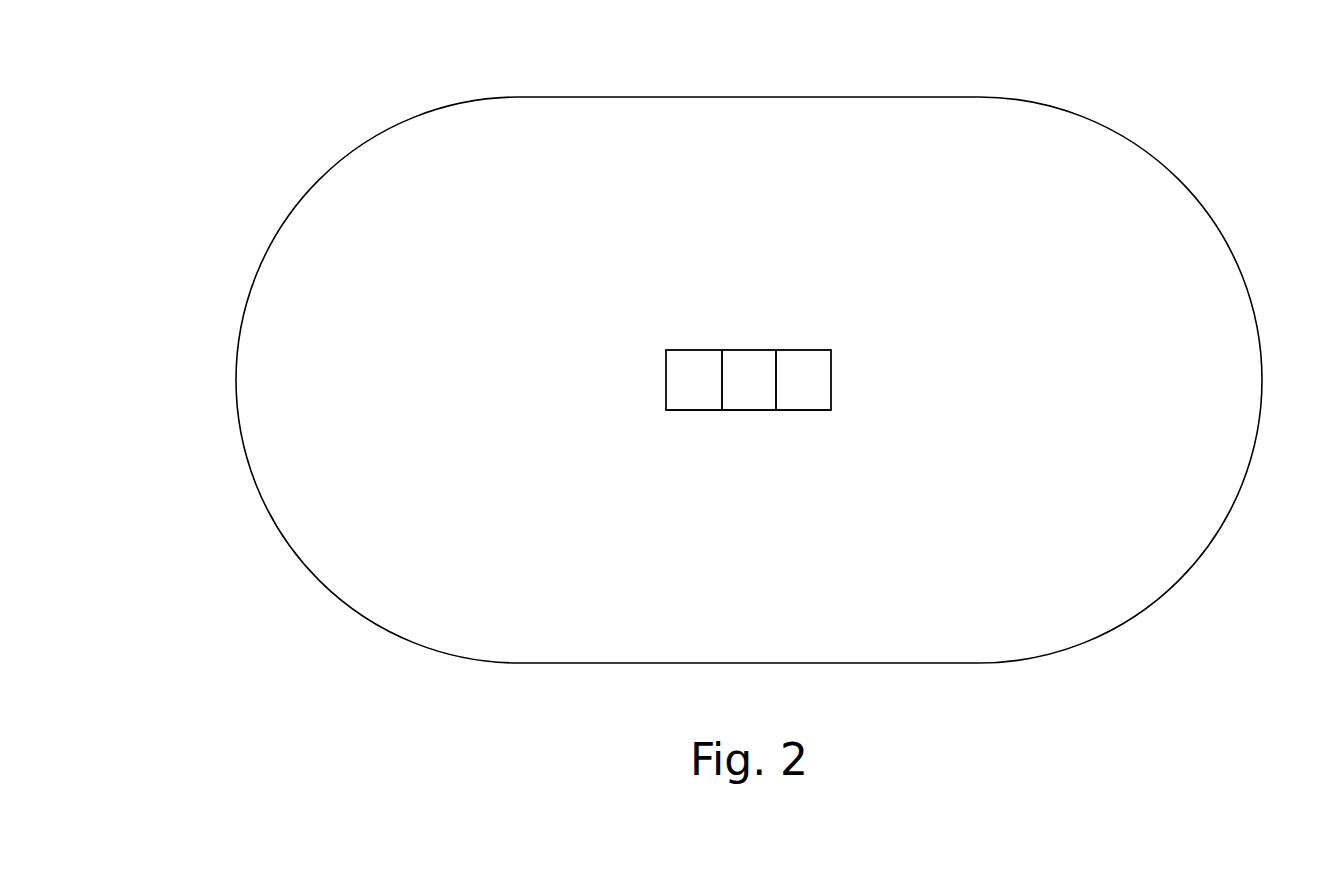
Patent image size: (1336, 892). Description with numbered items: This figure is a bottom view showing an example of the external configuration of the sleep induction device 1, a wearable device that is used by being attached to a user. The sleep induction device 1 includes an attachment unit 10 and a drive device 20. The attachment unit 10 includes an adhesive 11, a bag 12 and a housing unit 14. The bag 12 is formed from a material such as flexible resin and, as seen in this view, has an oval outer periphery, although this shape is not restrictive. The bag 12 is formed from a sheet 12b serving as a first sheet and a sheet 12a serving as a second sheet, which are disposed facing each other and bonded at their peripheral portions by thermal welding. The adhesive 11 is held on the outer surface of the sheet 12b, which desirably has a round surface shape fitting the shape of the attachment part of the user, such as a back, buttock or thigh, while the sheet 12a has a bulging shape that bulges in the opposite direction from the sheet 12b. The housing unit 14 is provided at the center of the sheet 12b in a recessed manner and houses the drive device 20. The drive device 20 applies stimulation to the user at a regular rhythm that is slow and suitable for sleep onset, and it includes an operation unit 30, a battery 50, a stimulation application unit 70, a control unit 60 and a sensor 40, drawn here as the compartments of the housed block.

The sleep induction device 1 is at (333, 153).
The attachment unit 10 is at (292, 190).
The adhesive 11 is at (347, 295).
The bag 12 is at (238, 347).
The sheet (second sheet) 12a is at (363, 472).
The sheet (first sheet) 12b is at (275, 530).
The drive device 20 is at (865, 252).
The operation unit 30 is at (694, 382).
The sensor 40 is at (800, 382).
The battery 50 is at (710, 347).
The control unit 60 is at (797, 347).
The stimulation application unit 70 is at (747, 382).
The housing unit 14 is at (754, 410).